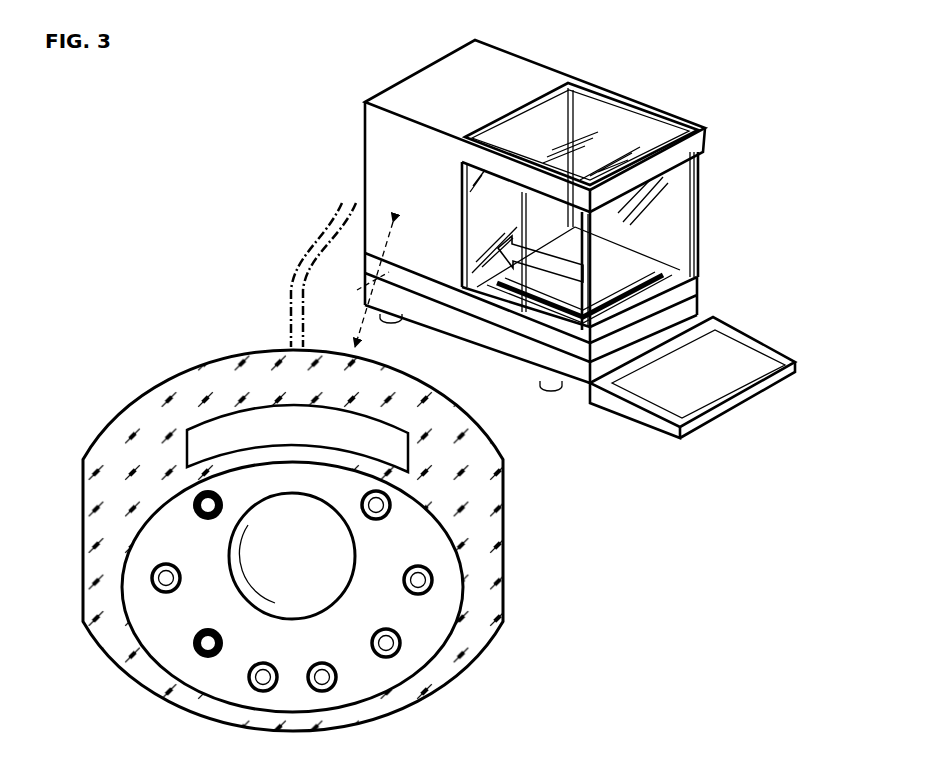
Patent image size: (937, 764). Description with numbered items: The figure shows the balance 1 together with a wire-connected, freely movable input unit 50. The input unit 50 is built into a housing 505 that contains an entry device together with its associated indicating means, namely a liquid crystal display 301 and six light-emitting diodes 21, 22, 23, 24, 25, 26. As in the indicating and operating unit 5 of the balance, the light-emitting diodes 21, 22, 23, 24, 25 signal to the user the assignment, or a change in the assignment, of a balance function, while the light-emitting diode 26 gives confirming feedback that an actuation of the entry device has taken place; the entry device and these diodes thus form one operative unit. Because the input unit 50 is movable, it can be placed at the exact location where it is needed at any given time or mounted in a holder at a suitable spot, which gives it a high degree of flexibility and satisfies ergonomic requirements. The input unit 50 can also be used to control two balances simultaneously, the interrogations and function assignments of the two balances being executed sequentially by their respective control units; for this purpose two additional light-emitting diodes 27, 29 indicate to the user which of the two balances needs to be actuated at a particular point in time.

The balance 1 is at (713, 130).
The indicating and operating unit 5 is at (728, 348).
The freely movable input unit 50 is at (215, 325).
The housing 505 is at (113, 452).
The liquid crystal display 301 is at (193, 488).
The light-emitting diode 27 is at (197, 497).
The light-emitting diode 29 is at (365, 497).
The light-emitting diode 26 is at (152, 572).
The light-emitting diode 21 is at (198, 657).
The light-emitting diode 25 is at (252, 687).
The light-emitting diode 24 is at (311, 688).
The light-emitting diode 23 is at (388, 658).
The light-emitting diode 22 is at (425, 594).